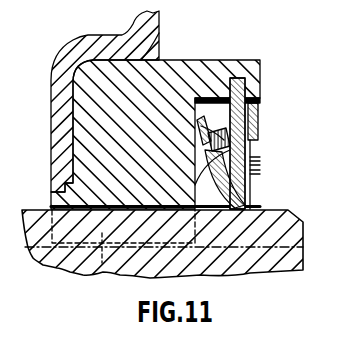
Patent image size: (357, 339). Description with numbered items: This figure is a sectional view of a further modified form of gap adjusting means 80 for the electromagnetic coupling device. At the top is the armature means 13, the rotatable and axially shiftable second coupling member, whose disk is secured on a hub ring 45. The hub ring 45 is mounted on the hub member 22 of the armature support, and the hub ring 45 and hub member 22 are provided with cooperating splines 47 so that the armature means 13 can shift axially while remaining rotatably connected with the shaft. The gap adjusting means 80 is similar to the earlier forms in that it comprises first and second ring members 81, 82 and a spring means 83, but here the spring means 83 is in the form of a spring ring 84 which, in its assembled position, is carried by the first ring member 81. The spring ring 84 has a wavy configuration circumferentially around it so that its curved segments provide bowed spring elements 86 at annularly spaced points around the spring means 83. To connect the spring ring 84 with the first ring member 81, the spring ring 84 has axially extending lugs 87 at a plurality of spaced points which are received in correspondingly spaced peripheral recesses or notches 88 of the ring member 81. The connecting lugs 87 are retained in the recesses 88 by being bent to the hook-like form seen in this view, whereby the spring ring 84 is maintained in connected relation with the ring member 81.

The armature means 13 is at (128, 23).
The hub ring 45 is at (165, 64).
The peripheral recesses 88 is at (216, 124).
The second ring member 82 is at (242, 130).
The axially extending lugs 87 is at (197, 151).
The bowed spring elements 86 is at (241, 153).
The spring ring 84 is at (252, 173).
The first ring member 81 is at (194, 186).
The spring means 83 is at (220, 125).
The gap adjusting means 80 is at (247, 118).
The hub member 22 is at (267, 210).
The splines 47 is at (100, 267).